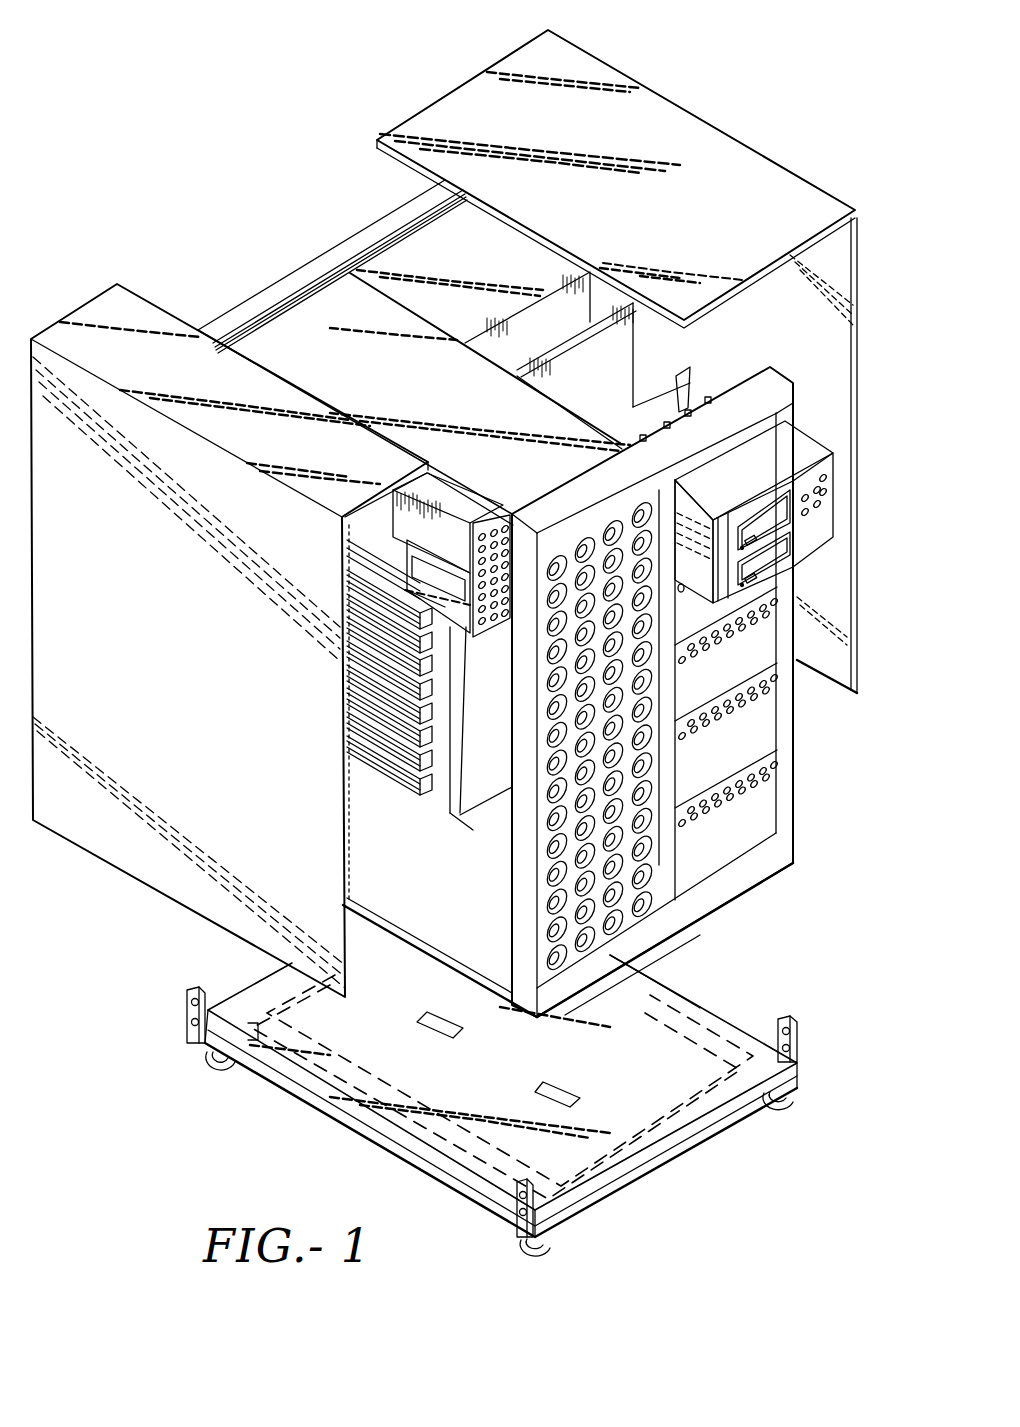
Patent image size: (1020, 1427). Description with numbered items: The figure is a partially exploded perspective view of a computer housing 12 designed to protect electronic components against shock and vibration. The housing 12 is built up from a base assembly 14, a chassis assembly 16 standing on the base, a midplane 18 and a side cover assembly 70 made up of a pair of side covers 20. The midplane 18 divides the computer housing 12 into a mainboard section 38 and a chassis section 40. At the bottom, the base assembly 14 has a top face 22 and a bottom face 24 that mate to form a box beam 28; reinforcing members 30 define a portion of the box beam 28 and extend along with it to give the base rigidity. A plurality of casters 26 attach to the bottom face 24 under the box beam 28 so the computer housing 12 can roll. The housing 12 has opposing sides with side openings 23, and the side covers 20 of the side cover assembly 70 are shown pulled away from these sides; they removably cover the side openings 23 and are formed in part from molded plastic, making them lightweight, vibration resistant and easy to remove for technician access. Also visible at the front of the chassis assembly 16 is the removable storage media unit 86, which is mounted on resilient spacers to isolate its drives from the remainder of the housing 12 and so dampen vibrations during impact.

The computer housing 12 is at (524, 566).
The base assembly 14 is at (515, 1101).
The chassis assembly 16 is at (388, 258).
The midplane 18 is at (337, 247).
The side covers 20 is at (727, 153).
The top face 22 is at (690, 1007).
The side openings 23 is at (493, 770).
The bottom face 24 is at (380, 1152).
The casters 26 is at (222, 1072).
The box beam 28 is at (640, 987).
The reinforcing members 30 is at (252, 1010).
The mainboard section 38 is at (293, 312).
The chassis section 40 is at (352, 260).
The side cover assembly 70 is at (580, 58).
The removable storage media unit 86 is at (823, 523).